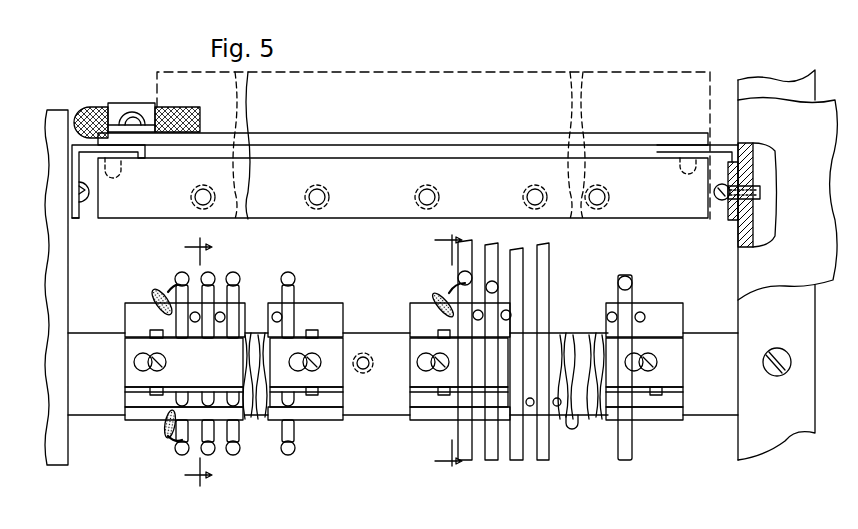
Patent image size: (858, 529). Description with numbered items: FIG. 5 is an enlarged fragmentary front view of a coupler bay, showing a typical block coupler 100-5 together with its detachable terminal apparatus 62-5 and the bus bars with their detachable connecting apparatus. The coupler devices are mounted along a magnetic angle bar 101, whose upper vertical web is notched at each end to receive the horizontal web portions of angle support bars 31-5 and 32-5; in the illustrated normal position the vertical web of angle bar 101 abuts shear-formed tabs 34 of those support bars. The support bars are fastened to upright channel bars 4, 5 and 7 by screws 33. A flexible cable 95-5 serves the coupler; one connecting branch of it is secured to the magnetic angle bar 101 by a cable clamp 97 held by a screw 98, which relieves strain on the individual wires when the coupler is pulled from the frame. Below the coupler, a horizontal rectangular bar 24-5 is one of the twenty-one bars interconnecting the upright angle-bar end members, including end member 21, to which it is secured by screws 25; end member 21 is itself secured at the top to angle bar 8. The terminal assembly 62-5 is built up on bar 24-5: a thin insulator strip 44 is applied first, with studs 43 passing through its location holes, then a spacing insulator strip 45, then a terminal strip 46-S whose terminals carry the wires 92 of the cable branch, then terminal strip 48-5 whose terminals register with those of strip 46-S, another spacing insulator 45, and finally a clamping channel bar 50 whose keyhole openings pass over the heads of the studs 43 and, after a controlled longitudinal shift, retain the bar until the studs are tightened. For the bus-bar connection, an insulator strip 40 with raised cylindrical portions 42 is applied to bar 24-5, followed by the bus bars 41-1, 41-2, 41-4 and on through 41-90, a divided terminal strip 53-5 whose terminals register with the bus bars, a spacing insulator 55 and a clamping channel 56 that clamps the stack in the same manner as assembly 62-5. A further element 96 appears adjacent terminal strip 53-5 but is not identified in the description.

The upright channel bar 4 is at (50, 310).
The upright channel bar 5 is at (820, 255).
The upright channel bar 7 is at (198, 362).
The angle bar 8 is at (448, 343).
The upright angle-bar end member 21 is at (815, 313).
The horizontal rectangular bar 24-5 is at (594, 333).
The screw 25 is at (792, 360).
The angle support bar 31-5 is at (79, 220).
The angle support bar 32-5 is at (740, 143).
The screw 33 is at (88, 203).
The shear-formed tab 34 is at (124, 172).
The insulator strip 40 is at (598, 416).
The bus bar 41-1 is at (465, 462).
The bus bar 41-2 is at (492, 462).
The bus bar 41-4 is at (543, 462).
The bus bar 41-90 is at (625, 462).
The raised cylindrical portion 42 is at (556, 408).
The stud 43 is at (319, 361).
The thin insulator strip 44 is at (262, 418).
The spacing insulator strip 45 is at (125, 398).
The terminal strip 46-S is at (336, 420).
The terminal strip 48-5 is at (335, 300).
The clamping channel bar 50 is at (125, 351).
The divided terminal strip 53-5 is at (410, 308).
The spacing insulator 55 is at (683, 401).
The clamping channel 56 is at (675, 364).
The detachable terminal apparatus 62-5 is at (136, 420).
The wire 92 is at (158, 292).
The flexible cable 95-5 is at (92, 108).
The wire spring 96 is at (439, 294).
The cable clamp 97 is at (120, 103).
The screw 98 is at (134, 114).
The block coupler 100-5 is at (422, 72).
The magnetic angle bar 101 is at (660, 219).